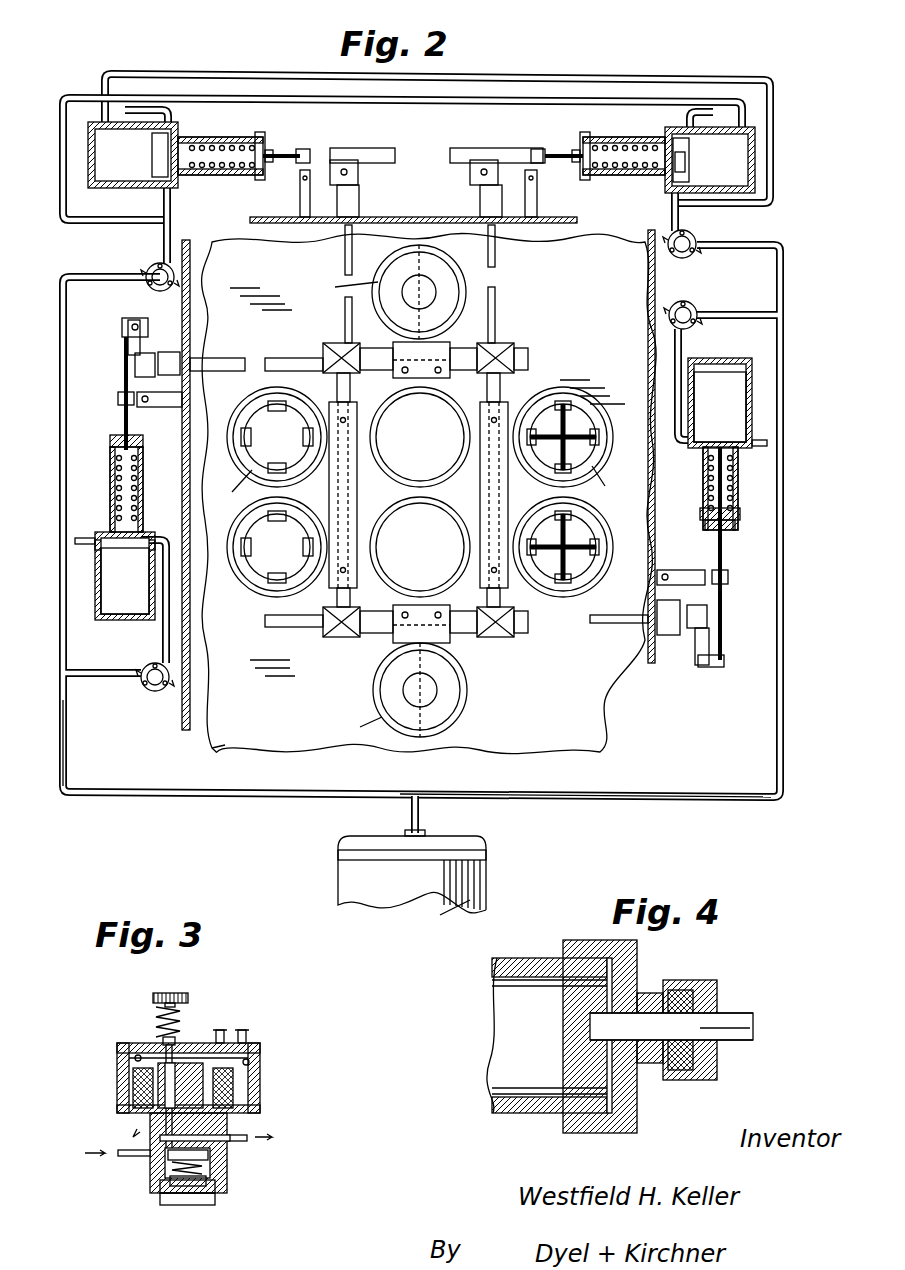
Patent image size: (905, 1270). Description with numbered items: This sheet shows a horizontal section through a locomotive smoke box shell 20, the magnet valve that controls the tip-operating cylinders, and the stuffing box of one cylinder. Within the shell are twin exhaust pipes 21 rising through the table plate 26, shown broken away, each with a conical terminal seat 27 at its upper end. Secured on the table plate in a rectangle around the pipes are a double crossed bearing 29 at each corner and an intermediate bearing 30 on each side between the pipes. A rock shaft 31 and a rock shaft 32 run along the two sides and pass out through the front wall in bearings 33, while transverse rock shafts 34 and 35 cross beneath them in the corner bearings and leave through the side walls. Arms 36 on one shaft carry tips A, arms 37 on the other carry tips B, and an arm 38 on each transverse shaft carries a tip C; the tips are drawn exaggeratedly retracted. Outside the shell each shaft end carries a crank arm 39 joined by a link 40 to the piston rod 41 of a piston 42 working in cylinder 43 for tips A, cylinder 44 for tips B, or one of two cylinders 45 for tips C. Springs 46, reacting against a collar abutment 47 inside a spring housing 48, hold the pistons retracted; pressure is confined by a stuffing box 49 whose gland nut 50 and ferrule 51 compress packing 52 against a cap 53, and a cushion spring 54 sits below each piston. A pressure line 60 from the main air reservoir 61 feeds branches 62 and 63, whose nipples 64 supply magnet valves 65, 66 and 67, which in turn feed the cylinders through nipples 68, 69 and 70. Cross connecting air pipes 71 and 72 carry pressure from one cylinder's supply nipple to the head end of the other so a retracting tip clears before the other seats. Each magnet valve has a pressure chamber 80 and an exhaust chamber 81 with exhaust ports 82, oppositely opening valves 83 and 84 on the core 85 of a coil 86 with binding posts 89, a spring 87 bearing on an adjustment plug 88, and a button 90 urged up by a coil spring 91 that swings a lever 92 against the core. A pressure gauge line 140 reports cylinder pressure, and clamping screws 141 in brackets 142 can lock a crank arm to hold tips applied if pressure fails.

In FIG. 2, the smoke box shell 20 is at (551, 236).
In FIG. 2, the exhaust pipes 21 is at (402, 514).
In FIG. 2, the table plate 26 is at (225, 745).
In FIG. 2, the terminal seat 27 is at (470, 551).
In FIG. 2, the double crossed bearing 29 is at (330, 356).
In FIG. 2, the intermediate bearing 30 is at (366, 476).
In FIG. 2, the rock shaft 31 is at (496, 308).
In FIG. 2, the rock shaft 32 is at (345, 258).
In FIG. 2, the bearings 33 is at (484, 204).
In FIG. 2, the rock shaft 34 is at (232, 358).
In FIG. 2, the rock shaft 35 is at (615, 626).
In FIG. 2, the arms 36 is at (484, 518).
In FIG. 2, the arms 37 is at (356, 428).
In FIG. 2, the arm 38 is at (426, 384).
In FIG. 2, the crank arm 39 is at (392, 163).
In FIG. 2, the link 40 is at (360, 150).
In FIG. 2, the piston rod 41 is at (305, 148).
In FIG. 4, the piston rod 41 is at (735, 1040).
In FIG. 2, the piston 42 is at (90, 604).
In FIG. 2, the cylinder 43 is at (752, 152).
In FIG. 2, the cylinder 44 is at (106, 180).
In FIG. 2, the cylinders 45 is at (130, 622).
In FIG. 2, the springs 46 is at (226, 168).
In FIG. 2, the collar abutment 47 is at (256, 140).
In FIG. 2, the spring housing 48 is at (215, 137).
In FIG. 4, the spring housing 48 is at (525, 1115).
In FIG. 2, the stuffing box 49 is at (268, 172).
In FIG. 4, the gland nut 50 is at (705, 980).
In FIG. 4, the ferrule 51 is at (738, 1004).
In FIG. 4, the packing 52 is at (690, 1085).
In FIG. 4, the cap 53 is at (635, 970).
In FIG. 2, the cushion spring 54 is at (690, 180).
In FIG. 2, the pressure line 60 is at (420, 824).
In FIG. 2, the main air reservoir 61 is at (478, 881).
In FIG. 2, the branch 62 is at (742, 792).
In FIG. 2, the branch 63 is at (58, 730).
In FIG. 2, the nipples 64 is at (105, 276).
In FIG. 3, the nipples 64 is at (140, 1160).
In FIG. 2, the magnet valve 65 is at (700, 248).
In FIG. 2, the magnet valve 66 is at (165, 276).
In FIG. 2, the magnet valves 67 is at (152, 692).
In FIG. 2, the nipple 68 is at (672, 228).
In FIG. 3, the nipple 68 is at (258, 1145).
In FIG. 2, the nipple 69 is at (172, 202).
In FIG. 2, the nipples 70 is at (169, 600).
In FIG. 2, the cross connecting air pipe 71 is at (715, 76).
In FIG. 2, the cross connecting air pipe 72 is at (593, 97).
In FIG. 3, the pressure chamber 80 is at (215, 1167).
In FIG. 3, the exhaust chamber 81 is at (132, 1112).
In FIG. 3, the exhaust ports 82 is at (140, 1130).
In FIG. 3, the pressure supply valve 83 is at (160, 1190).
In FIG. 3, the exhaust valve 84 is at (240, 1124).
In FIG. 3, the core 85 is at (200, 1045).
In FIG. 3, the coil 86 is at (240, 1096).
In FIG. 3, the spring 87 is at (200, 1178).
In FIG. 3, the adjustment plug 88 is at (196, 1206).
In FIG. 3, the binding posts 89 is at (224, 1034).
In FIG. 3, the button 90 is at (158, 996).
In FIG. 3, the coil spring 91 is at (155, 1017).
In FIG. 3, the lever 92 is at (120, 1044).
In FIG. 2, the pressure gauge line 140 is at (150, 110).
In FIG. 2, the clamping screws 141 is at (304, 178).
In FIG. 2, the brackets 142 is at (535, 204).